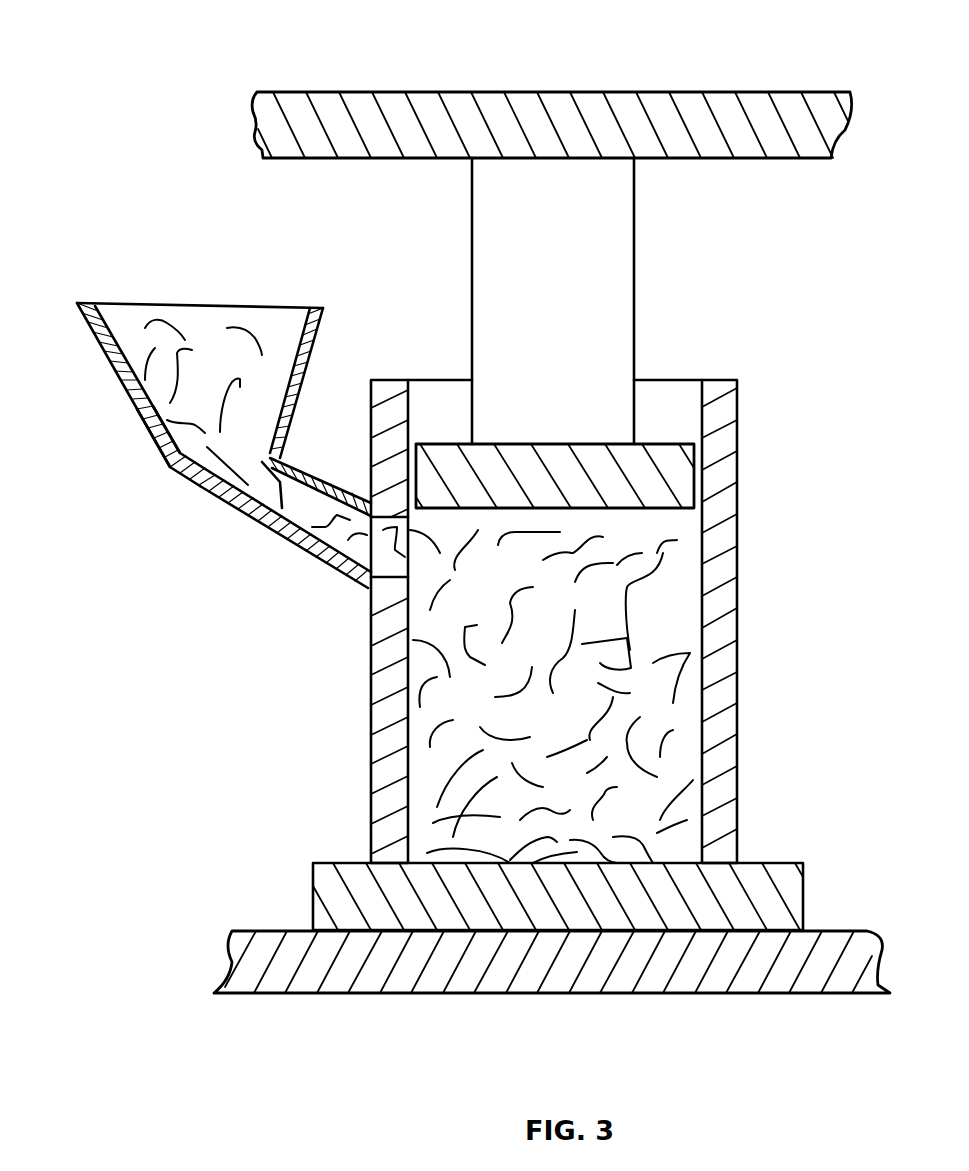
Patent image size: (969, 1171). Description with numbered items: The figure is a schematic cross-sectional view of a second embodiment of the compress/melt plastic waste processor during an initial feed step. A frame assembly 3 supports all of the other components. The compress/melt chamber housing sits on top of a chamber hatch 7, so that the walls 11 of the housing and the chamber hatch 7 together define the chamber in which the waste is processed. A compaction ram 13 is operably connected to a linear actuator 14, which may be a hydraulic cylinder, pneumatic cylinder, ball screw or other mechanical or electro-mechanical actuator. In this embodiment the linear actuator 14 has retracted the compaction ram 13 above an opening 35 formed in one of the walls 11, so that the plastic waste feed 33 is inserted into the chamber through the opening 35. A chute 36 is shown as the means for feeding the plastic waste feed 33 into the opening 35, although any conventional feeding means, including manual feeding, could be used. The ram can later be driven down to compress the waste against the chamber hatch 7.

The frame assembly 3 is at (837, 113).
The linear actuator 14 is at (598, 250).
The compaction ram 13 is at (695, 458).
The walls 11 is at (390, 673).
The chamber hatch 7 is at (797, 878).
The chute 36 is at (128, 318).
The plastic waste feed 33 is at (188, 420).
The opening 35 is at (371, 584).